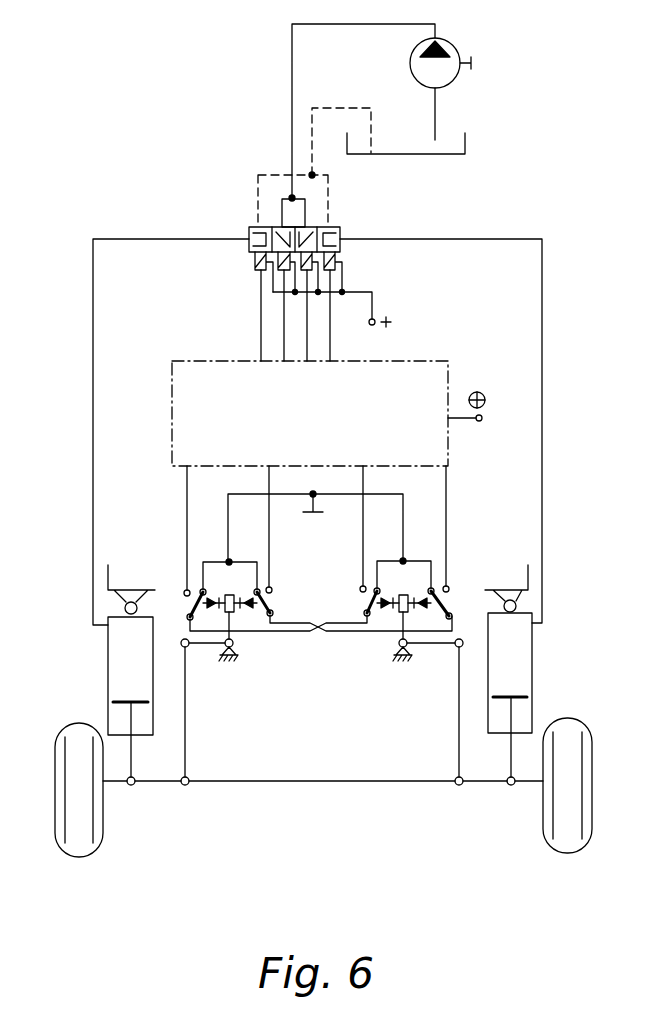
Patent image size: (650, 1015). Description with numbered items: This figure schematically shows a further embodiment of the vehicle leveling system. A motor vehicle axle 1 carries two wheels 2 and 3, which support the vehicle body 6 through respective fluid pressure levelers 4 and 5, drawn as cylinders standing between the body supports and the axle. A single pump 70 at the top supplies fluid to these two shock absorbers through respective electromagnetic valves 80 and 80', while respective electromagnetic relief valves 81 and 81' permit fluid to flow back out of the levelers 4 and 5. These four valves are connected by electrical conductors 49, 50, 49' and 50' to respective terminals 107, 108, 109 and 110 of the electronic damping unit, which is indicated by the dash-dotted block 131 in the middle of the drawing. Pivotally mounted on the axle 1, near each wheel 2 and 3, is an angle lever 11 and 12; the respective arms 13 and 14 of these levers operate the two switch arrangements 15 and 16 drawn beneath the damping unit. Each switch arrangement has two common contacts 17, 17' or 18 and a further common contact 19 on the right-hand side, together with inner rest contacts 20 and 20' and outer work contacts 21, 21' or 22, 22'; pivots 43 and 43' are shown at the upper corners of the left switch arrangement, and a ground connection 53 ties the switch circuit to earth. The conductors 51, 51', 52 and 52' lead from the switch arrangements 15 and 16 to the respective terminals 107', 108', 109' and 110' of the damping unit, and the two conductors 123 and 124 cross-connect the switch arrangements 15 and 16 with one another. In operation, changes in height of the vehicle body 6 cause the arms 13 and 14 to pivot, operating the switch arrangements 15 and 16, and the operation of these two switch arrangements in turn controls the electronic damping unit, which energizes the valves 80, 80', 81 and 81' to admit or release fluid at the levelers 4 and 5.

The axle 1 is at (325, 782).
The wheel 2 is at (80, 845).
The wheel 3 is at (565, 842).
The fluid pressure leveler 4 is at (120, 675).
The fluid pressure leveler 5 is at (518, 663).
The vehicle body 6 is at (108, 578).
The angle lever 11 is at (182, 641).
The angle lever 12 is at (456, 647).
The vertical arm 13 is at (235, 589).
The vertical arm 14 is at (408, 590).
The double switch arrangement 15 is at (225, 620).
The double switch arrangement 16 is at (395, 622).
The common contact 17 is at (181, 606).
The common contact 17' is at (281, 601).
The common contact 18 is at (365, 613).
The inner rest contact 19 is at (452, 615).
The inner rest contact 20 is at (384, 558).
The inner rest contact 20' is at (434, 561).
The outer make contact 21 is at (169, 574).
The outer make contact 21' is at (285, 574).
The outer make contact 22 is at (347, 575).
The outer make contact 22' is at (467, 575).
The left pivot 43 is at (214, 579).
The left pivot 43' is at (252, 563).
The electrical conductor 49 is at (238, 308).
The electrical conductor 49' is at (348, 292).
The electrical conductor 50 is at (221, 320).
The electrical conductor 50' is at (386, 320).
The conductor 51 is at (168, 529).
The conductor 51' is at (290, 537).
The conductor 52 is at (346, 539).
The conductor 52' is at (472, 519).
The ground connection 53 is at (318, 509).
The pump 70 is at (450, 57).
The electromagnetic valve 80 is at (272, 202).
The electromagnetic valve 80' is at (333, 207).
The electromagnetic relief valve 81 is at (267, 250).
The electromagnetic relief valve 81' is at (361, 226).
The terminal 107 is at (247, 315).
The terminal 108 is at (276, 315).
The terminal 109 is at (301, 315).
The terminal 110 is at (328, 315).
The terminal 107' is at (173, 531).
The terminal 108' is at (255, 529).
The terminal 109' is at (350, 529).
The terminal 110' is at (433, 529).
The conductor 123 is at (316, 624).
The conductor 124 is at (300, 632).
The electronic control unit 131 is at (425, 357).